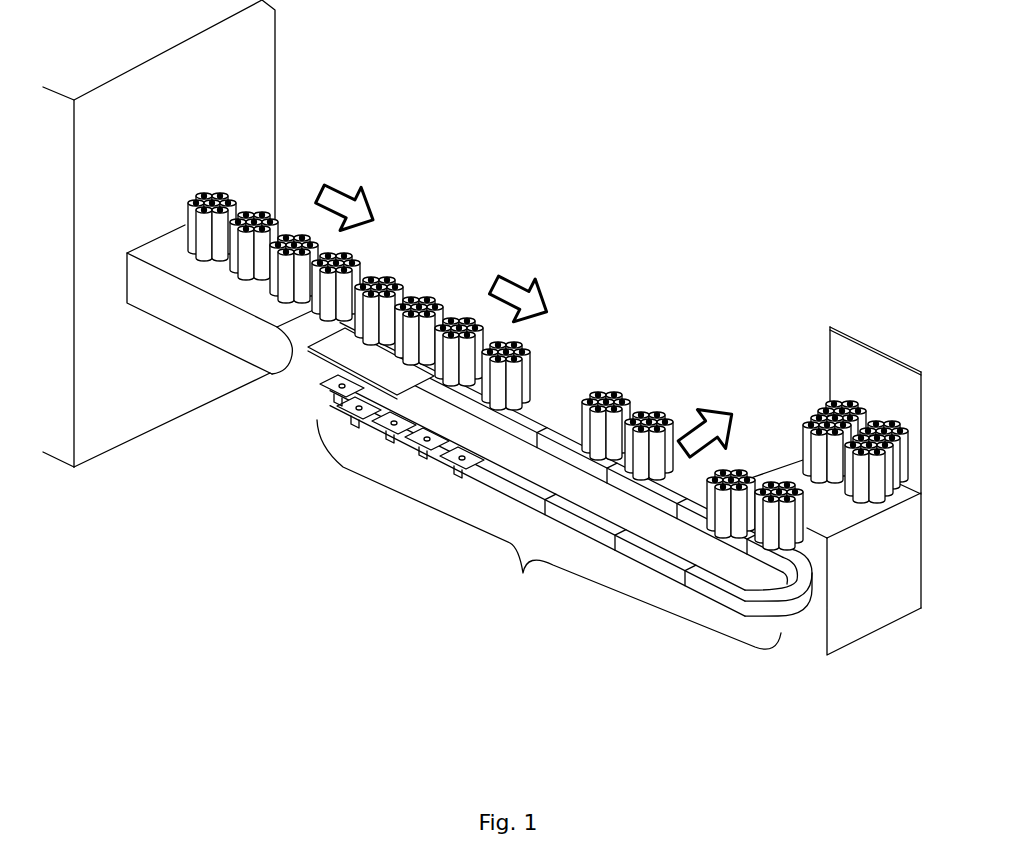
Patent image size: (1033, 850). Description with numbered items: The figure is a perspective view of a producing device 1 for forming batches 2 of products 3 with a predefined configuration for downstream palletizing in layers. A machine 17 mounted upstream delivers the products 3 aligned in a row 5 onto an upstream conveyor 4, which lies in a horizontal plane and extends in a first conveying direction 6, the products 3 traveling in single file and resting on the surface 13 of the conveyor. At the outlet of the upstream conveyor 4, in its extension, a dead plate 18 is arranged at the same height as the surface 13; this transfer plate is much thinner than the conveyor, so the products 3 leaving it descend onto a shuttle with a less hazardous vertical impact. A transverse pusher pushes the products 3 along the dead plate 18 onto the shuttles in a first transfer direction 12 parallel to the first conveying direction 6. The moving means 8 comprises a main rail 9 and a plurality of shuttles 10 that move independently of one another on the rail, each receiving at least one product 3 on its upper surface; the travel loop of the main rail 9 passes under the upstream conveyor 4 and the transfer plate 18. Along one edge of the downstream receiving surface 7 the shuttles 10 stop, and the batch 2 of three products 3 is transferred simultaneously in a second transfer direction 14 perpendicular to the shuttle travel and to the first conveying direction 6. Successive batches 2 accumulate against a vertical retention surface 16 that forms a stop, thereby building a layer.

The producing device 1 is at (438, 620).
The batches 2 is at (753, 447).
The products 3 is at (430, 290).
The upstream conveyor 4 is at (215, 383).
The row 5 is at (175, 185).
The first conveying direction 6 is at (338, 203).
The downstream receiving surface 7 is at (840, 514).
The moving means 8 is at (564, 514).
The main rail 9 is at (543, 423).
The shuttles 10 is at (380, 448).
The first transfer direction 12 is at (510, 297).
The surface of the upstream conveyor 13 is at (190, 265).
The second transfer direction 14 is at (697, 446).
The vertical retention surface 16 is at (878, 345).
The machine 17 is at (85, 495).
The dead plate 18 is at (320, 368).